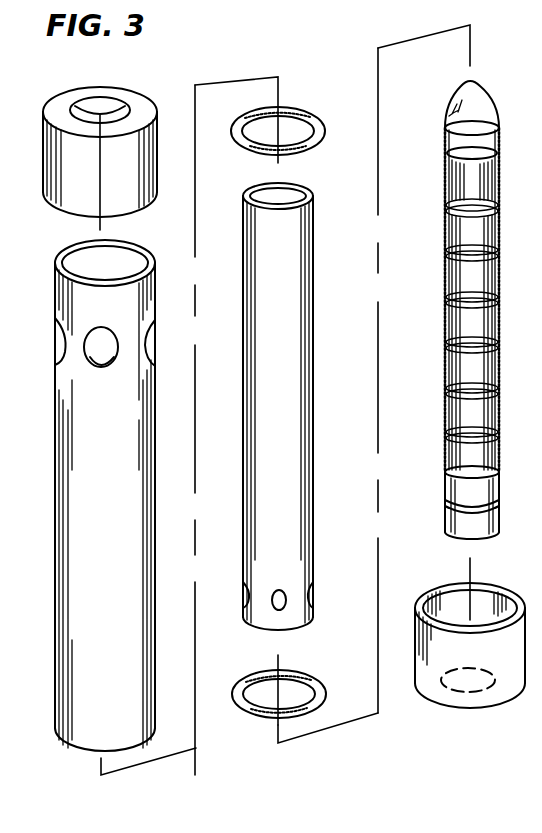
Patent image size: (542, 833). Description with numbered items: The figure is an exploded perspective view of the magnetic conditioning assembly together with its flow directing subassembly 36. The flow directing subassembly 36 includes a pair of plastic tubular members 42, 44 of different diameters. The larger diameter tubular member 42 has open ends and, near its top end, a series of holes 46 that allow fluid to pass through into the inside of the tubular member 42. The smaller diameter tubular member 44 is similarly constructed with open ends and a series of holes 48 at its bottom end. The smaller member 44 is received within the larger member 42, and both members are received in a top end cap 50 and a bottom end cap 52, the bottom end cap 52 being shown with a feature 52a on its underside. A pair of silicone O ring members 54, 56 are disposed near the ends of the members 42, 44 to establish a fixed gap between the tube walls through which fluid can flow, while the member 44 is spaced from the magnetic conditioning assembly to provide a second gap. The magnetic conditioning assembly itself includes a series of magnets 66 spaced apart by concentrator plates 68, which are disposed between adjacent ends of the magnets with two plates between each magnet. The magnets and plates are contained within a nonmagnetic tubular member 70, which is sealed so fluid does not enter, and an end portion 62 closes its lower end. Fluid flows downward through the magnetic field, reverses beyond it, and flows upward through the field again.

The flow directing subassembly 36 is at (210, 692).
The larger diameter tubular member 42 is at (90, 587).
The smaller diameter tubular member 44 is at (287, 432).
The holes 46 is at (92, 362).
The holes 48 is at (312, 592).
The top end cap 50 is at (143, 108).
The bottom end cap 52 is at (430, 687).
The recess in bottom cap 52a is at (490, 690).
The O ring member 54 is at (312, 122).
The O ring member 56 is at (262, 676).
The bottom contact ring 62 is at (463, 504).
The magnets 66 is at (466, 278).
The concentrator plates 68 is at (457, 343).
The nonmagnetic tubular member 70 is at (472, 146).